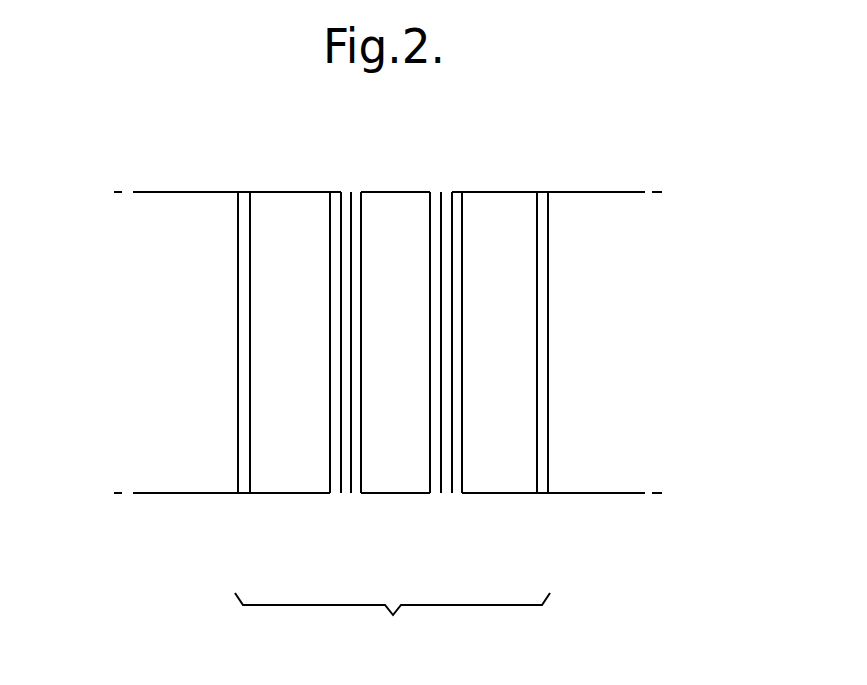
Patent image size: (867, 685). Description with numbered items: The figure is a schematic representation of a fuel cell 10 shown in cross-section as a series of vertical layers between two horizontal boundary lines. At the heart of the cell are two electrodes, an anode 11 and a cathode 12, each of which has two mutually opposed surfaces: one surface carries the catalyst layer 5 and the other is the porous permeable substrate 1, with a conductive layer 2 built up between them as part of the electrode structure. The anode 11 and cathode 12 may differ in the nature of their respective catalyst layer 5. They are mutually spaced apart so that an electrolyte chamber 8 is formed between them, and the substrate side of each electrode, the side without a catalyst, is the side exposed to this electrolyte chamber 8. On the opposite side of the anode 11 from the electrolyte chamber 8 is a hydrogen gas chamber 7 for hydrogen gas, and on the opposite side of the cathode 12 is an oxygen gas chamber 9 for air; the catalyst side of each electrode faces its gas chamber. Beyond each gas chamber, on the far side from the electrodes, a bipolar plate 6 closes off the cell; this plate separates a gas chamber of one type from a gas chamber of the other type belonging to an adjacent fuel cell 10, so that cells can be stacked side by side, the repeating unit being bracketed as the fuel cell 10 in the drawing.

The porous permeable substrate 1 is at (353, 477).
The conductive layer 2 is at (343, 483).
The catalyst layer 5 is at (332, 477).
The bipolar plate 6 is at (243, 493).
The hydrogen gas chamber 7 is at (293, 206).
The electrolyte chamber 8 is at (398, 206).
The oxygen gas chamber 9 is at (188, 206).
The fuel cell 10 is at (127, 525).
The anode 11 is at (345, 190).
The cathode 12 is at (447, 190).